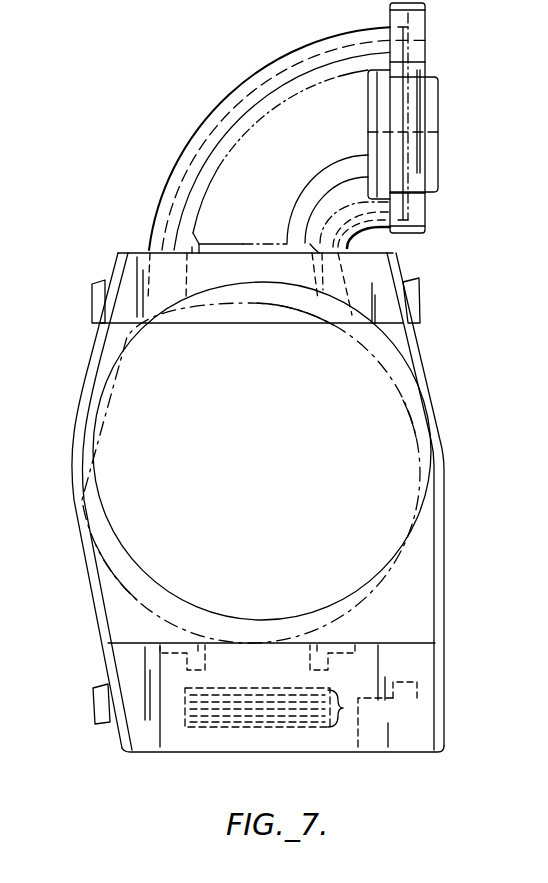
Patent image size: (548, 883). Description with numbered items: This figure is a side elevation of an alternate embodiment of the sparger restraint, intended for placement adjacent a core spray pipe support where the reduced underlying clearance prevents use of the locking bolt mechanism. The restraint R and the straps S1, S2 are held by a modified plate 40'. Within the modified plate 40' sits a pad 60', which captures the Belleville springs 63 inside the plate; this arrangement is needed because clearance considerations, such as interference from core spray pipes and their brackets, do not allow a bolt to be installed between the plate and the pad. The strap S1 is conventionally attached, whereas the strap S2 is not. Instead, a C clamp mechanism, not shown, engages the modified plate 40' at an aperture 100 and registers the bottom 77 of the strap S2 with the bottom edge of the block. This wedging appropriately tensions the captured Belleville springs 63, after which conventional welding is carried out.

The restraint R is at (156, 199).
The strap S1 is at (72, 460).
The strap S2 is at (444, 452).
The modified plate 40' is at (290, 500).
The pad 60' is at (257, 621).
The Belleville springs 63 is at (343, 712).
The aperture 100 is at (417, 689).
The bottom of strap S2 77 is at (443, 752).